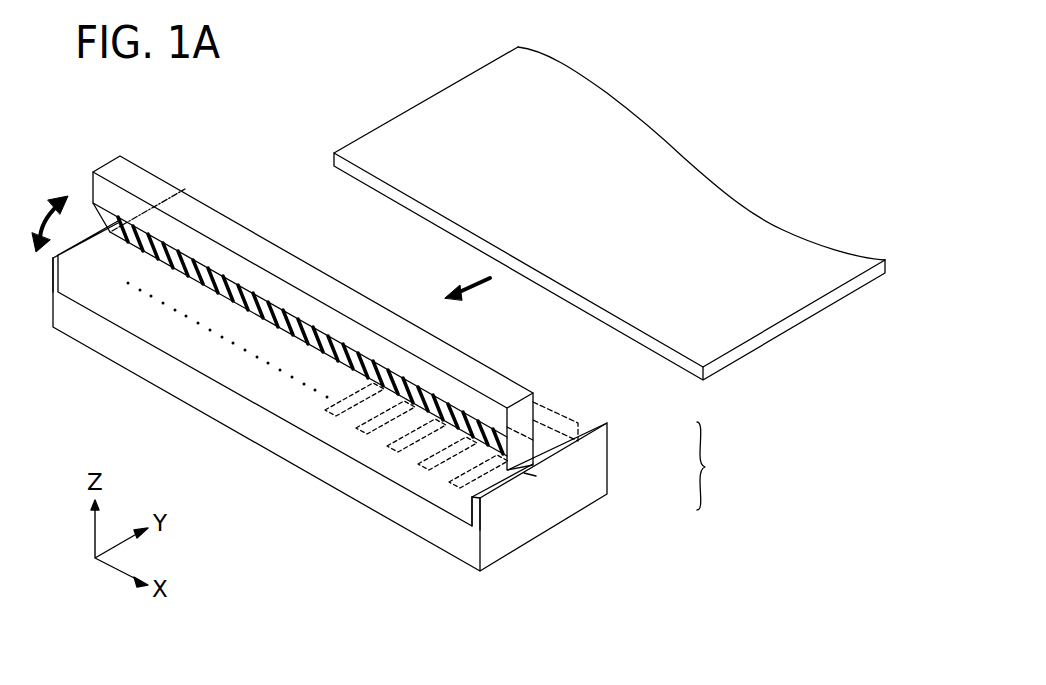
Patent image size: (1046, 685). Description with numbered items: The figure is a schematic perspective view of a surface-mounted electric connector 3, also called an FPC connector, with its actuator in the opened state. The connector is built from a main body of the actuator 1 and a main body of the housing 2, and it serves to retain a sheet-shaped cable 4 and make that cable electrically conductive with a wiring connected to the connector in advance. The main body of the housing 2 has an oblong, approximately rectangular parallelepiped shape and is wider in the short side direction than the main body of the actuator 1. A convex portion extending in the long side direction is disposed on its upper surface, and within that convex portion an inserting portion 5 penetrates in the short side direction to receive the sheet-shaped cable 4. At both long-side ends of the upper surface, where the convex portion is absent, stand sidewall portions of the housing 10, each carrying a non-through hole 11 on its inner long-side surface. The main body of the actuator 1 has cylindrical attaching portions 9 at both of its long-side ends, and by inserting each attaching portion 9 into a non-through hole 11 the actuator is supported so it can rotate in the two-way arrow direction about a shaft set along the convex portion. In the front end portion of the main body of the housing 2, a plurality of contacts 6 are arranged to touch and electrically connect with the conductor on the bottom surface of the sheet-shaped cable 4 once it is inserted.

The main body of the actuator 1 is at (522, 430).
The main body of the housing 2 is at (595, 477).
The surface-mounted electric connector 3 is at (712, 466).
The sheet-shaped cable 4 is at (670, 167).
The inserting portion 5 is at (557, 420).
The contacts 6 is at (390, 448).
The cylindrical attaching portions 9 is at (110, 231).
The sidewall portion of the housing 10 is at (53, 275).
The non-through hole 11 is at (533, 477).